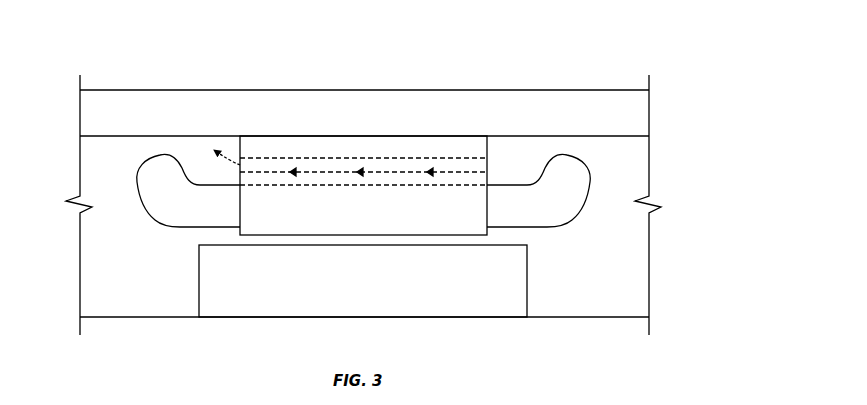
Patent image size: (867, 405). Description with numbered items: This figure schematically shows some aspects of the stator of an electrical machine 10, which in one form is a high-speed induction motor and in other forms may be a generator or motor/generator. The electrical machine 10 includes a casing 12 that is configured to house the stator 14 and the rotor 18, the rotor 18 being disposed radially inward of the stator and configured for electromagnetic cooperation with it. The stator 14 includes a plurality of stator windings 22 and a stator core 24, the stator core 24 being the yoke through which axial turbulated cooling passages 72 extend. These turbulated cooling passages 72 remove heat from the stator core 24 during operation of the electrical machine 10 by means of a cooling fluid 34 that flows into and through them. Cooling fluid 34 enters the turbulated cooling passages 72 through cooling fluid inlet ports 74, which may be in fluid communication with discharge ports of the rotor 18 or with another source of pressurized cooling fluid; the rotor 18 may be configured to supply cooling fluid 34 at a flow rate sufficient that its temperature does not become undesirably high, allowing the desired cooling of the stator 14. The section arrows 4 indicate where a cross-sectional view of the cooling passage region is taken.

The electrical machine 10 is at (642, 38).
The casing 12 is at (412, 90).
The stator 14 is at (630, 158).
The rotor 18 is at (528, 296).
The stator windings 22 is at (152, 218).
The stator core 24 is at (490, 150).
The cooling fluid 34 is at (494, 165).
The axial turbulated cooling passages 72 is at (385, 158).
The cooling fluid inlet ports 74 is at (497, 176).
The section line 4- 4 is at (297, 88).